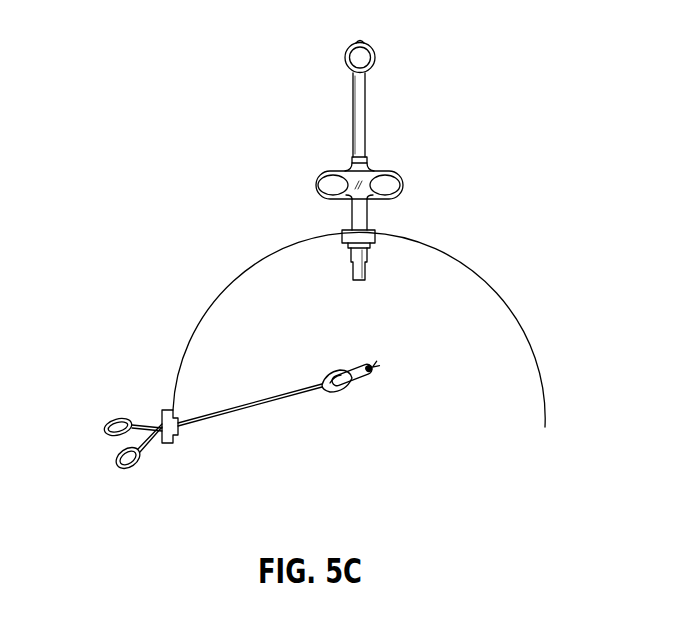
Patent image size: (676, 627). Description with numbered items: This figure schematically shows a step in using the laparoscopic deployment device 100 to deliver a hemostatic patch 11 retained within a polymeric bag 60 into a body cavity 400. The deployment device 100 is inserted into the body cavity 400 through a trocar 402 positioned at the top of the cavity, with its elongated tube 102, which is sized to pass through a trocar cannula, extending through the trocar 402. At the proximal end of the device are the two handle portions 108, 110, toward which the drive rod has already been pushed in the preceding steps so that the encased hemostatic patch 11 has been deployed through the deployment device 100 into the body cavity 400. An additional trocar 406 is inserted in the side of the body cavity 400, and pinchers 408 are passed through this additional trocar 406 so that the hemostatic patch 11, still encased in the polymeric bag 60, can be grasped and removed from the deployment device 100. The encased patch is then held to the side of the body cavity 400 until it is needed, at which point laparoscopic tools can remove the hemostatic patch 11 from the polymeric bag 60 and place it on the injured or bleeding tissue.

The laparoscopic deployment device 100 is at (367, 161).
The handle portion 108 is at (318, 184).
The handle portion 110 is at (401, 184).
The elongated tube 102 is at (368, 218).
The trocar 402 is at (343, 232).
The body cavity 400 is at (489, 281).
The additional trocar 406 is at (163, 411).
The pinchers 408 is at (116, 466).
The polymeric bag 60 is at (232, 434).
The hemostatic patch 11 is at (357, 370).